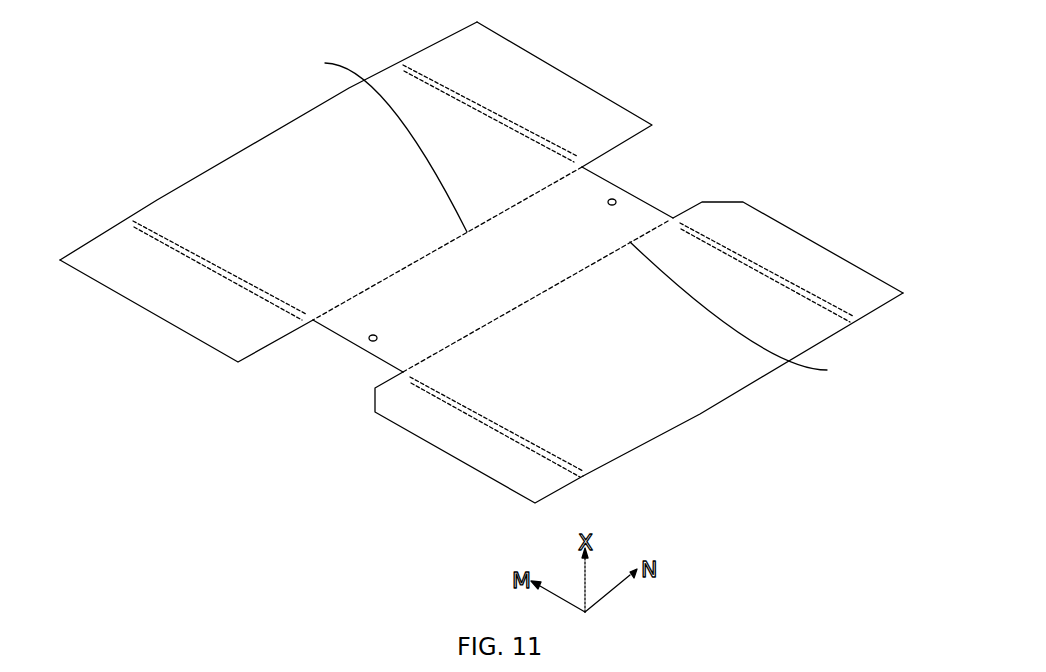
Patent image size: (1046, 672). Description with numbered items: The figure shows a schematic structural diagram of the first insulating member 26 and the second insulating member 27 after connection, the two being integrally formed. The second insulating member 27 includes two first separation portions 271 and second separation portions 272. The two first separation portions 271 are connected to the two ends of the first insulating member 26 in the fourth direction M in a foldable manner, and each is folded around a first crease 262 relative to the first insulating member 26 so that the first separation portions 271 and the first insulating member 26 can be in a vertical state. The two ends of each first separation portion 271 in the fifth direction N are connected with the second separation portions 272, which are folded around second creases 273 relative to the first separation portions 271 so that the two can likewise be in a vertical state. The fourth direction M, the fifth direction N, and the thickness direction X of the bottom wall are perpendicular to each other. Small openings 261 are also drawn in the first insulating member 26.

The second insulating member 27 is at (667, 464).
The first insulating member 26 is at (641, 204).
The positioning hole 261 is at (616, 198).
The first crease 262 is at (576, 218).
The first separation portion 271 is at (288, 145).
The second separation portion 272 is at (580, 103).
The second crease 273 is at (435, 86).